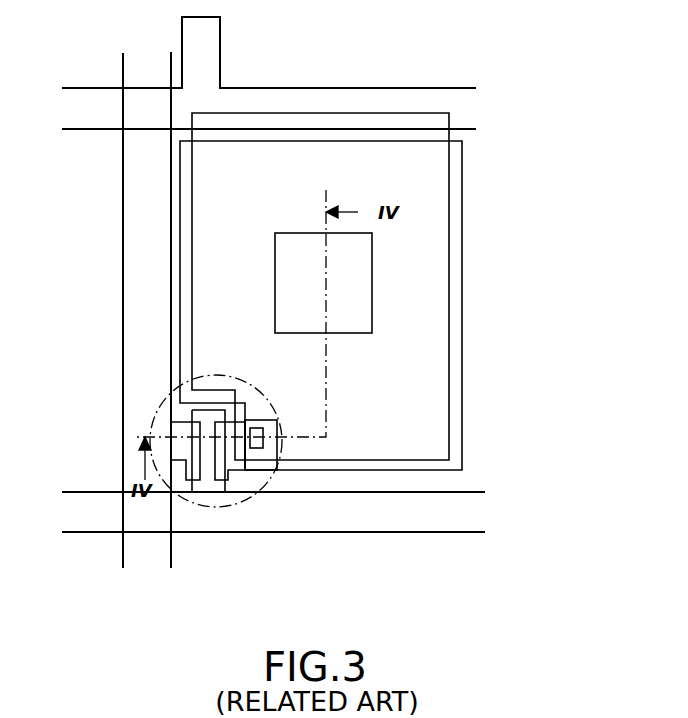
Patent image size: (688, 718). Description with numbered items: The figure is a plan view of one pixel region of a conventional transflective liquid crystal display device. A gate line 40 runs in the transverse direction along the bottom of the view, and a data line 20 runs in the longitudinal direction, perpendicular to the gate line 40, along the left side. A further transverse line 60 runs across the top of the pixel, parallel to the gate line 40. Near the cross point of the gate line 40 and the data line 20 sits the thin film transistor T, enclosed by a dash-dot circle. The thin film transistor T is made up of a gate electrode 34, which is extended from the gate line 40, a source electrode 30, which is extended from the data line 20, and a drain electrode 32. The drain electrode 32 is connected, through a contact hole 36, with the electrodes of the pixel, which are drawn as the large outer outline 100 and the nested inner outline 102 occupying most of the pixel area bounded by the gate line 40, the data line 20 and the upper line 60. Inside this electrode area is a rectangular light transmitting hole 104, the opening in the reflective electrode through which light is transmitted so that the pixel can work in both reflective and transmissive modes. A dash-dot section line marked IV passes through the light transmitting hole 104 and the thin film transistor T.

The data line 20 is at (133, 66).
The gate line (previous) 60 is at (402, 100).
The gate line 40 is at (443, 510).
The pixel electrode 100 is at (462, 178).
The storage capacitor electrode 102 is at (450, 133).
The light transmitting hole 104 is at (372, 250).
The source electrode 30 is at (178, 497).
The drain electrode 32 is at (238, 495).
The gate electrode 34 is at (212, 505).
The contact hole 36 is at (257, 493).
The thin film transistor T is at (260, 493).